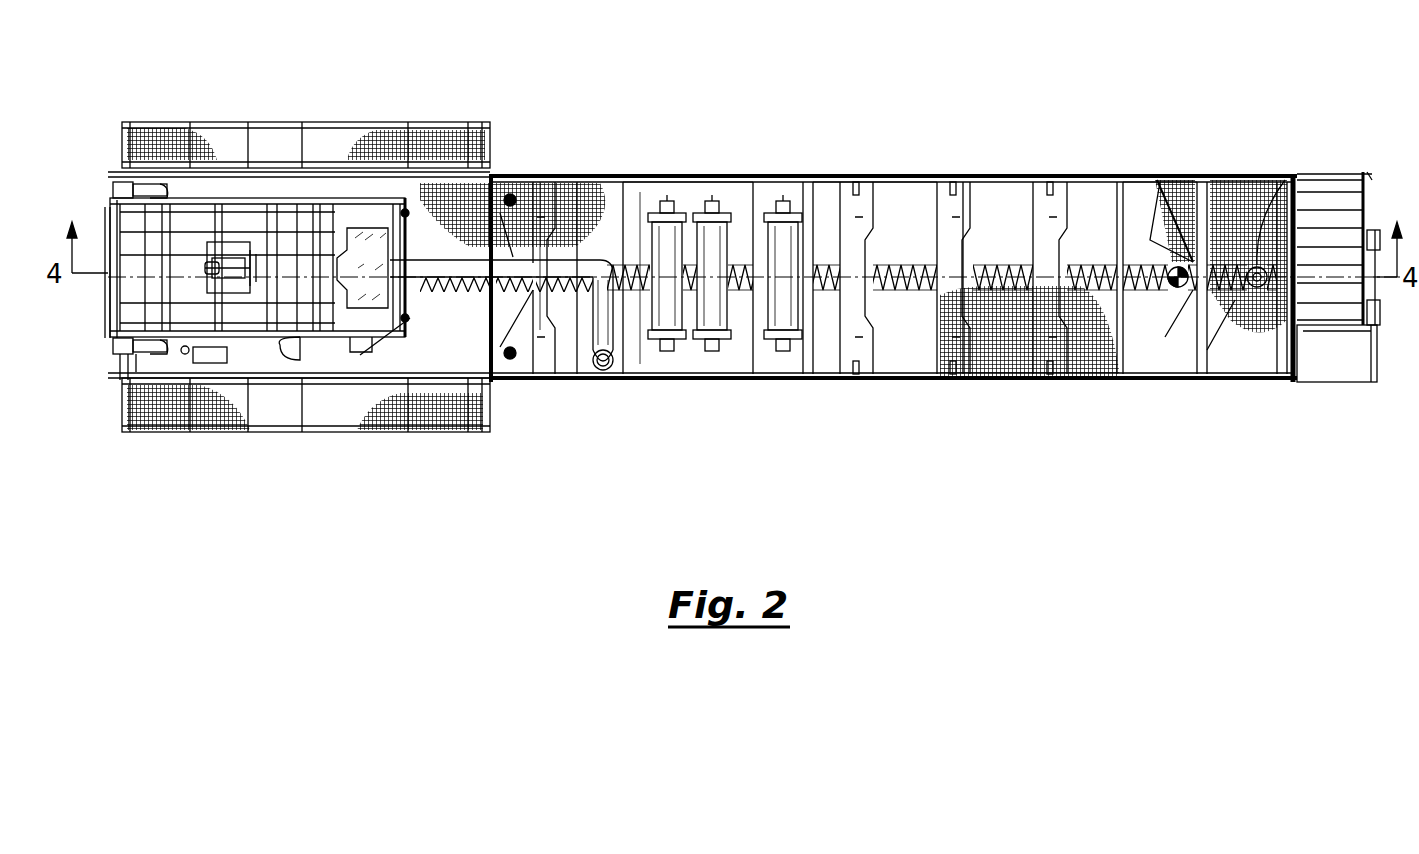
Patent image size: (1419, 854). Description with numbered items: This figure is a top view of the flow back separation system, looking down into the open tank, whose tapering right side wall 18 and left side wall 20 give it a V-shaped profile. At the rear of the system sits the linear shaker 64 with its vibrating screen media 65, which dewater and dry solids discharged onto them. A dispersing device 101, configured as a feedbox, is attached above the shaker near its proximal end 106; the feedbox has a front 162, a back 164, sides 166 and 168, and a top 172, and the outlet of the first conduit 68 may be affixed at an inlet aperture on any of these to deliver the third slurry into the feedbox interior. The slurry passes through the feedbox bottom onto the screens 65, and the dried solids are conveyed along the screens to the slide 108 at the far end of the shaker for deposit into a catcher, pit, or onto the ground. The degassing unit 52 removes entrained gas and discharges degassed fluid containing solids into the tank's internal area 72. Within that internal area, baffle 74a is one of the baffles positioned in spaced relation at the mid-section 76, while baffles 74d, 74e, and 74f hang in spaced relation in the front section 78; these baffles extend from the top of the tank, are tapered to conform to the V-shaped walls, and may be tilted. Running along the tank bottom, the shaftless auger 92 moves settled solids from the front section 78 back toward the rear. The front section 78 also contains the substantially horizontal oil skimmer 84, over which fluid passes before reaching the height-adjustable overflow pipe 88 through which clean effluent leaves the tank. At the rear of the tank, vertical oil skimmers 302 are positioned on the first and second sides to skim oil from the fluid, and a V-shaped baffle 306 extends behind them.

The right side wall 18 is at (920, 380).
The left side wall 20 is at (1245, 175).
The degassing unit 52 is at (713, 317).
The linear shaker 64 is at (190, 205).
The vibrating screen media 65 is at (250, 217).
The first conduit 68 is at (555, 200).
The internal area 72 is at (725, 197).
The baffle 74a is at (555, 320).
The baffle 74d is at (857, 247).
The baffle 74e is at (953, 247).
The baffle 74f is at (1053, 233).
The mid-section 76 is at (892, 320).
The front section 78 is at (1142, 175).
The oil skimmer 84 is at (1170, 220).
The overflow pipe 88 is at (1293, 175).
The shaftless auger 92 is at (1093, 290).
The dispersing device 101 is at (370, 243).
The proximal end 106 is at (310, 230).
The slide 108 is at (108, 320).
The front 162 is at (405, 318).
The back 164 is at (335, 287).
The side 166 is at (345, 225).
The side 168 is at (378, 345).
The top 172 is at (405, 213).
The oil skimmer 302 is at (510, 200).
The baffle 306 is at (545, 217).